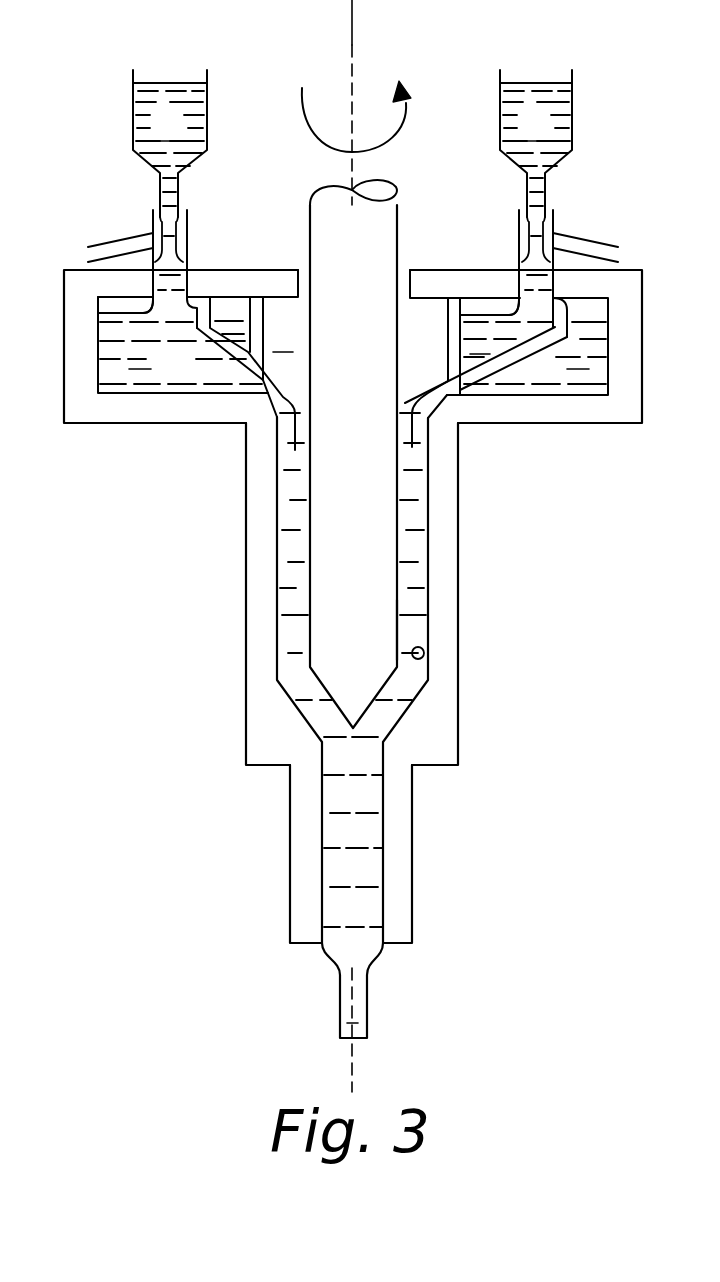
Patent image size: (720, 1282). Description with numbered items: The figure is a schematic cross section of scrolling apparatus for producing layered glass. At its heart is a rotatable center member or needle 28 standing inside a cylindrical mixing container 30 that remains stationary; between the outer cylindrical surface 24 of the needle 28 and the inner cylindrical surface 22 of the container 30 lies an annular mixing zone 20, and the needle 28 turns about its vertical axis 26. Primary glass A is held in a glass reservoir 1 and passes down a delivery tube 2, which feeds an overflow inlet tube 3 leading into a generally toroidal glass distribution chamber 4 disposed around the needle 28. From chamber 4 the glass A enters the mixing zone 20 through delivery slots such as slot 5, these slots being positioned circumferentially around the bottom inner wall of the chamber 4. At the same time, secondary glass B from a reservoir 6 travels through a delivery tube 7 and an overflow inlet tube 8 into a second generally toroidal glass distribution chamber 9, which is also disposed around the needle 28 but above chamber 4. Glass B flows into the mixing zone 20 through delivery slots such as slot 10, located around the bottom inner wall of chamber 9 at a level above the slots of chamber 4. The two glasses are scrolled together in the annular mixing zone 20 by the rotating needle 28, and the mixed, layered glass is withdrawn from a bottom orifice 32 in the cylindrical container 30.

The glass reservoir 1 is at (133, 112).
The delivery tube 2 is at (160, 187).
The overflow inlet tube 3 is at (153, 235).
The glass distribution chamber 4 is at (113, 304).
The delivery slot 5 is at (258, 392).
The reservoir 6 is at (572, 112).
The delivery tube 7 is at (548, 190).
The overflow inlet tube 8 is at (554, 235).
The glass distribution chamber 9 is at (228, 297).
The delivery slot 10 is at (446, 368).
The annular mixing zone 20 is at (288, 560).
The inner cylindrical surface 22 is at (424, 652).
The outer cylindrical surface 24 is at (398, 630).
The axis of rotation 26 is at (354, 43).
The needle 28 is at (366, 622).
The cylindrical mixing container 30 is at (483, 527).
The bottom orifice 32 is at (357, 943).